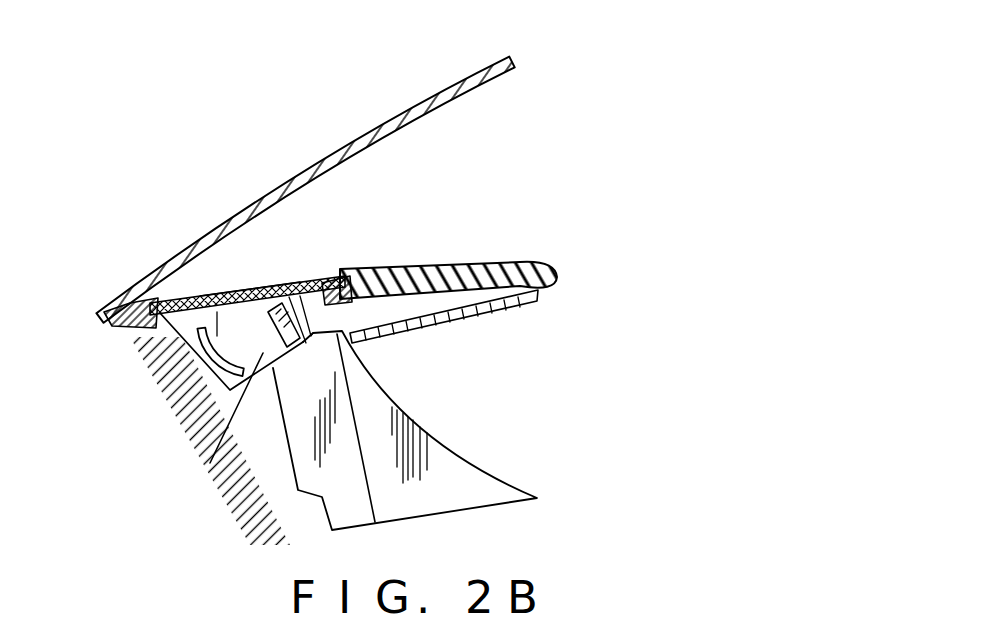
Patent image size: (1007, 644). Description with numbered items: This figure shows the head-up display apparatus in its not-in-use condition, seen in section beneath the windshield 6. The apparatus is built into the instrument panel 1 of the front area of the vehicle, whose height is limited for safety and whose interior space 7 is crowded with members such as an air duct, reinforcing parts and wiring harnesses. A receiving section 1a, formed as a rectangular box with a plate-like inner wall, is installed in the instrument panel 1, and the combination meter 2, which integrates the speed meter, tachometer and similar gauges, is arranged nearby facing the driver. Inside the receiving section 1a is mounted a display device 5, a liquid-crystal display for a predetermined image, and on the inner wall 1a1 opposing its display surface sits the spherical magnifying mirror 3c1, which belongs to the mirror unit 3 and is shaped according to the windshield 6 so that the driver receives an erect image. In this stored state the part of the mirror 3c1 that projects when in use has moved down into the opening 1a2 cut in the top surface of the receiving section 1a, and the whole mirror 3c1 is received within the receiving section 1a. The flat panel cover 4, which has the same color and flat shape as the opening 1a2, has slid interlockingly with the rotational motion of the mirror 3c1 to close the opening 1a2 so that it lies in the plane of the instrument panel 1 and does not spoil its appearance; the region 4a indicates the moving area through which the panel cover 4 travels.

The instrument panel 1 is at (540, 265).
The receiving section 1a is at (210, 463).
The inner wall 1a1 is at (197, 352).
The opening 1a2 is at (163, 297).
The combination meter 2 is at (417, 455).
The mirror unit 3 is at (170, 298).
The spherical magnifying mirror 3c1 is at (198, 334).
The panel cover 4 is at (222, 297).
The moving area of the panel cover 4a is at (272, 298).
The display device 5 is at (322, 290).
The windshield 6 is at (362, 132).
The space 7 is at (190, 407).